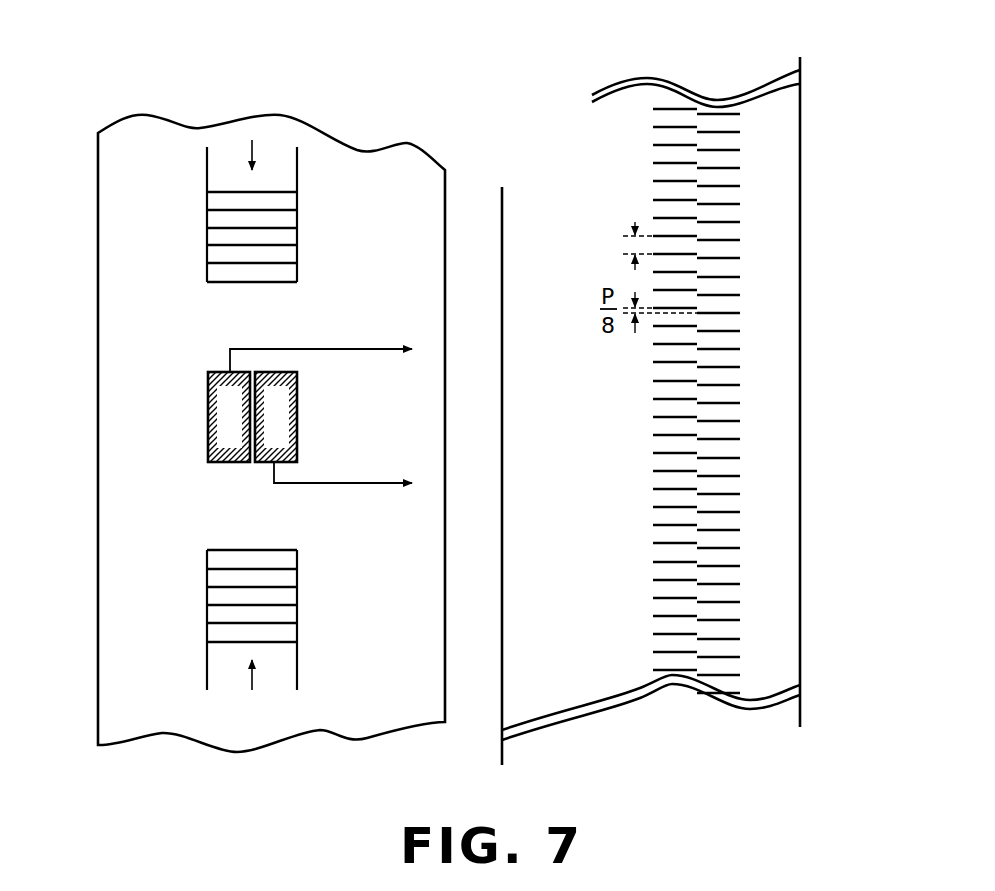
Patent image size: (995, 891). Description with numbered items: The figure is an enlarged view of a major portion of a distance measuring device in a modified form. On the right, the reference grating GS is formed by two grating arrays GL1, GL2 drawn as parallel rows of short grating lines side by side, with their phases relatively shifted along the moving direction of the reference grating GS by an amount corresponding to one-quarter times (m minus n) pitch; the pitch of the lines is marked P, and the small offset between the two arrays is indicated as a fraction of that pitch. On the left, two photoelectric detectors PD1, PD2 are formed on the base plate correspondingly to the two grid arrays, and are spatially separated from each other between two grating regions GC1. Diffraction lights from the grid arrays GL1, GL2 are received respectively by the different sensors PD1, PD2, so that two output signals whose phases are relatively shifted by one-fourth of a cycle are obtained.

The grating GC1 is at (207, 265).
The photoelectric detector PD1 is at (313, 391).
The photoelectric detector PD2 is at (336, 427).
The grating array GL1 is at (675, 115).
The grating array GL2 is at (720, 120).
The reference grating GS is at (790, 403).
The pitch P is at (628, 246).